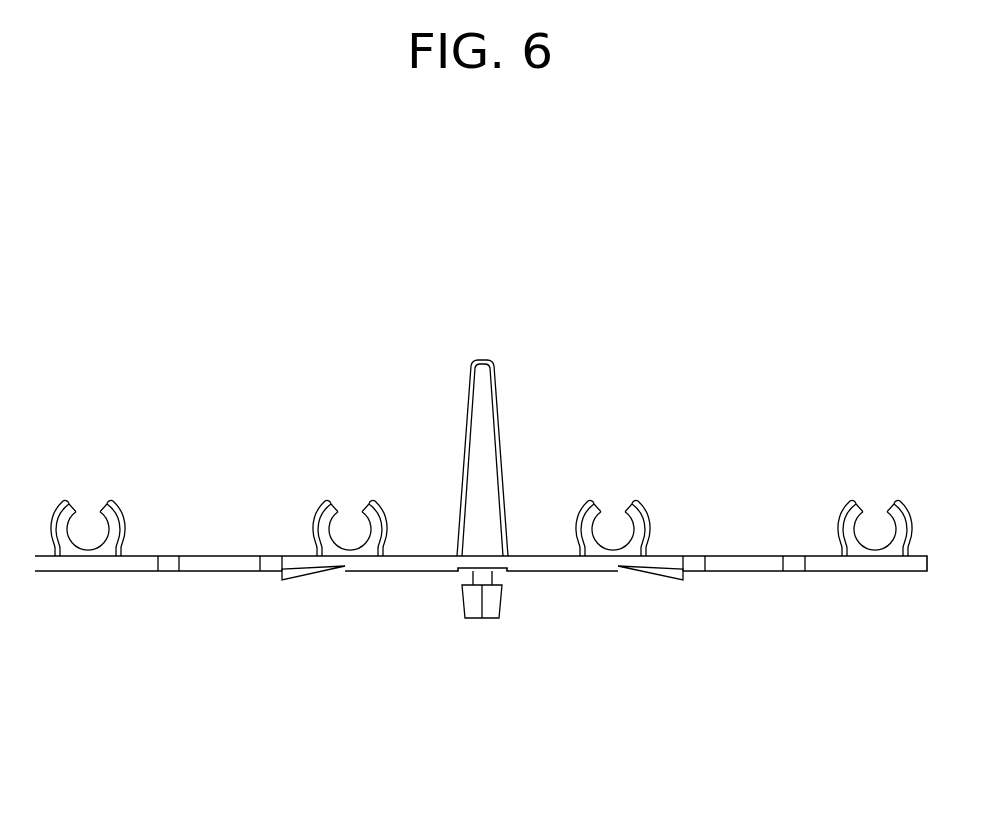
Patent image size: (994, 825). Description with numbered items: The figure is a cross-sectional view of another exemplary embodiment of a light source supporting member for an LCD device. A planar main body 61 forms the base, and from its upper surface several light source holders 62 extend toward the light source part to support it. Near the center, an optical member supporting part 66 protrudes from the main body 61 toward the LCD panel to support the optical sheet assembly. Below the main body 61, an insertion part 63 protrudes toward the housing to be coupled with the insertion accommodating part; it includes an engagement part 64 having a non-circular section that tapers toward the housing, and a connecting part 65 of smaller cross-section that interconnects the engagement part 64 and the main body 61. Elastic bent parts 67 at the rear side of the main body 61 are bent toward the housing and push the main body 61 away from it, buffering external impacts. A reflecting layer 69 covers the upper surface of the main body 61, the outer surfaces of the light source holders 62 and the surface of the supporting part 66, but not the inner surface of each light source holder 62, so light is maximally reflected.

The main body 61 is at (767, 556).
The light source holder 62 is at (893, 503).
The insertion part 63 is at (456, 649).
The engagement part 64 is at (472, 612).
The connecting part 65 is at (473, 578).
The optical member supporting part 66 is at (483, 433).
The elastic bent part 67 is at (668, 588).
The reflecting layer 69 is at (495, 387).